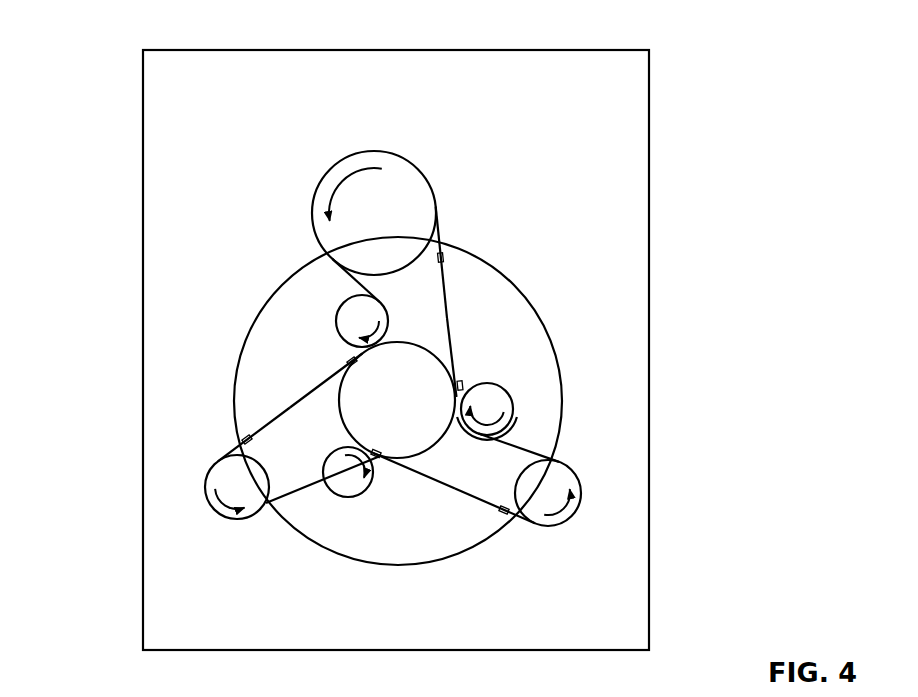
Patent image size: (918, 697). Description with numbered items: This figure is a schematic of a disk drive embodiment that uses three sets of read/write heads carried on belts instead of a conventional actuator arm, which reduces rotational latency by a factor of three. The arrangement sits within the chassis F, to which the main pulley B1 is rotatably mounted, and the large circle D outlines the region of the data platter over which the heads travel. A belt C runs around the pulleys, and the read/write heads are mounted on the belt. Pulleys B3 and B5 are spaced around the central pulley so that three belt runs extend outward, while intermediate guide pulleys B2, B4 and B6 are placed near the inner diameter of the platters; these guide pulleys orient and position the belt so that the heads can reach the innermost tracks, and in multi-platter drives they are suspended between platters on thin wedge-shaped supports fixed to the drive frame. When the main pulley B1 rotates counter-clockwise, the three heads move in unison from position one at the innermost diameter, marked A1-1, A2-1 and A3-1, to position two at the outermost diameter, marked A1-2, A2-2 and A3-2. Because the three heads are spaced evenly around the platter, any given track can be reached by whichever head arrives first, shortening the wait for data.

The chassis F is at (207, 70).
The drive unit envelope D is at (380, 540).
The main pulley B1 is at (398, 153).
The intermediate guide pulley B2 is at (501, 384).
The pulley B3 is at (566, 463).
The intermediate guide pulley B4 is at (336, 496).
The pulley B5 is at (204, 487).
The intermediate guide pulley B6 is at (342, 304).
The belt C is at (515, 441).
The first read/write head at position one A1-1 is at (465, 386).
The first read/write head at position two A1-2 is at (449, 257).
The second read/write head at position one A2-1 is at (381, 461).
The second read/write head at position two A2-2 is at (505, 518).
The third read/write head at position one A3-1 is at (349, 357).
The third read/write head at position two A3-2 is at (248, 433).